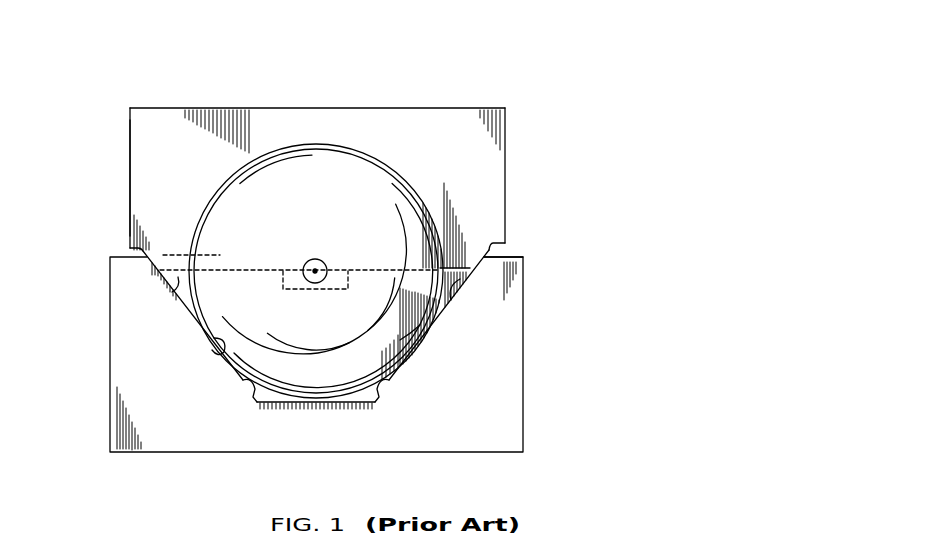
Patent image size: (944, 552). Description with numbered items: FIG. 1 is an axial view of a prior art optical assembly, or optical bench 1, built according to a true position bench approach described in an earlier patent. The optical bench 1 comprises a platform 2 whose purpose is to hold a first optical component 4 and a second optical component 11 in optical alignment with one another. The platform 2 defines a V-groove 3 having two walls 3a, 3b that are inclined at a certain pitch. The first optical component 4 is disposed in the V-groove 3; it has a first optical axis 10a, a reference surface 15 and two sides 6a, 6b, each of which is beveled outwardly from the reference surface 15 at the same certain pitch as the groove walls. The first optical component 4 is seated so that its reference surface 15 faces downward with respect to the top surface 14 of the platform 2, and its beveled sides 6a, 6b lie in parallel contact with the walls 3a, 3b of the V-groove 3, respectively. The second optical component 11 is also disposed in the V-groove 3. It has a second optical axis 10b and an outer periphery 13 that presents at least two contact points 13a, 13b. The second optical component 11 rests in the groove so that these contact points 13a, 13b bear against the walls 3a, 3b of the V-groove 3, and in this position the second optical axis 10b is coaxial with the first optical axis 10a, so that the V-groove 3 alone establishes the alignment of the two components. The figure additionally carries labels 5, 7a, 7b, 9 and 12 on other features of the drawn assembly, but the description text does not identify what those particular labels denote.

The optical bench 1 is at (507, 55).
The platform 2 is at (486, 453).
The V-groove 3 is at (456, 296).
The wall of V-groove 3a is at (250, 397).
The wall of V-groove 3b is at (372, 396).
The first optical component 4 is at (128, 162).
The upper block 5 is at (160, 127).
The side of first optical component 6a is at (140, 250).
The side of first optical component 6b is at (503, 248).
The first side wall 7a is at (130, 187).
The second side wall 7b is at (506, 167).
The sensor 9 is at (298, 290).
The first optical axis 10a is at (378, 228).
The second optical axis 10b is at (300, 271).
The second optical component 11 is at (290, 147).
The center bore 12 is at (310, 264).
The outer periphery 13 is at (221, 193).
The contact point 13a is at (216, 348).
The contact point 13b is at (418, 338).
The top surface of platform 14 is at (512, 250).
The reference surface 15 is at (372, 273).